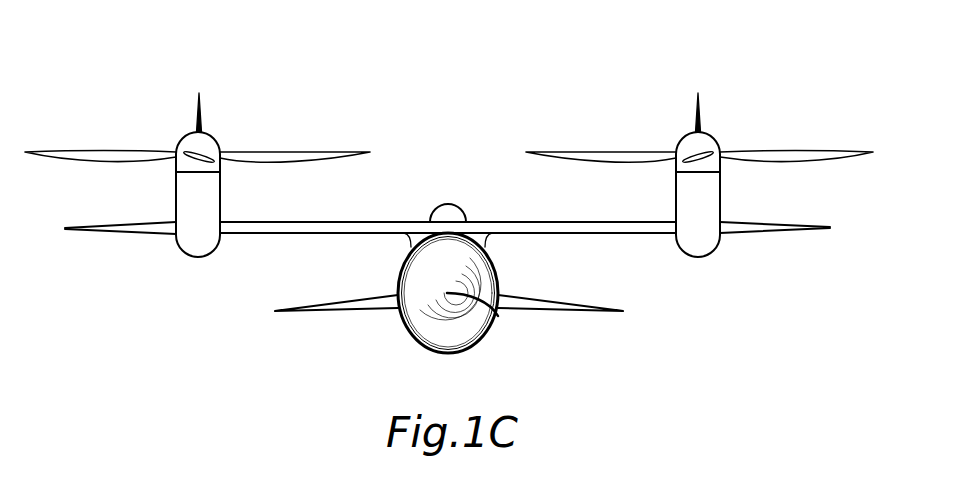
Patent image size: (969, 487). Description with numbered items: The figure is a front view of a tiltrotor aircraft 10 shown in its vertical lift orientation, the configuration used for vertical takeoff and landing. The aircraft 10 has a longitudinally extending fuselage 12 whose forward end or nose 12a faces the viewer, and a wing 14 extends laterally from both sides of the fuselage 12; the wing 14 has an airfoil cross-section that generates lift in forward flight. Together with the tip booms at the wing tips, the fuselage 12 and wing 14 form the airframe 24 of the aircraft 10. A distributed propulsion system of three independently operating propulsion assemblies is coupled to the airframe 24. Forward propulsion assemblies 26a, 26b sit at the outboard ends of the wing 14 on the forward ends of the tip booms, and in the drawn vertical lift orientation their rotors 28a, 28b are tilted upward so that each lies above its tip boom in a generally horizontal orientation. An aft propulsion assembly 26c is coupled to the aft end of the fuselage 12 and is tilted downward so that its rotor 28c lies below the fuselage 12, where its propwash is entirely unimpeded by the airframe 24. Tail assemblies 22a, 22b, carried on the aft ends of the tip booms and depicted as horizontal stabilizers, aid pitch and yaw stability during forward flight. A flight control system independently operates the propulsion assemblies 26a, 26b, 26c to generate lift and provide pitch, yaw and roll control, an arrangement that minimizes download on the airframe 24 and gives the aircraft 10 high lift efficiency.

The tiltrotor aircraft 10 is at (479, 108).
The fuselage 12 is at (400, 312).
The nose 12a is at (498, 316).
The wing 14 is at (343, 222).
The tail assembly 22a is at (695, 117).
The tail assembly 22b is at (202, 117).
The airframe 24 is at (487, 214).
The forward propulsion assembly 26a is at (714, 210).
The forward propulsion assembly 26b is at (183, 210).
The aft propulsion assembly 26c is at (447, 205).
The rotor 28a is at (805, 152).
The rotor 28b is at (88, 152).
The rotor 28c is at (570, 310).